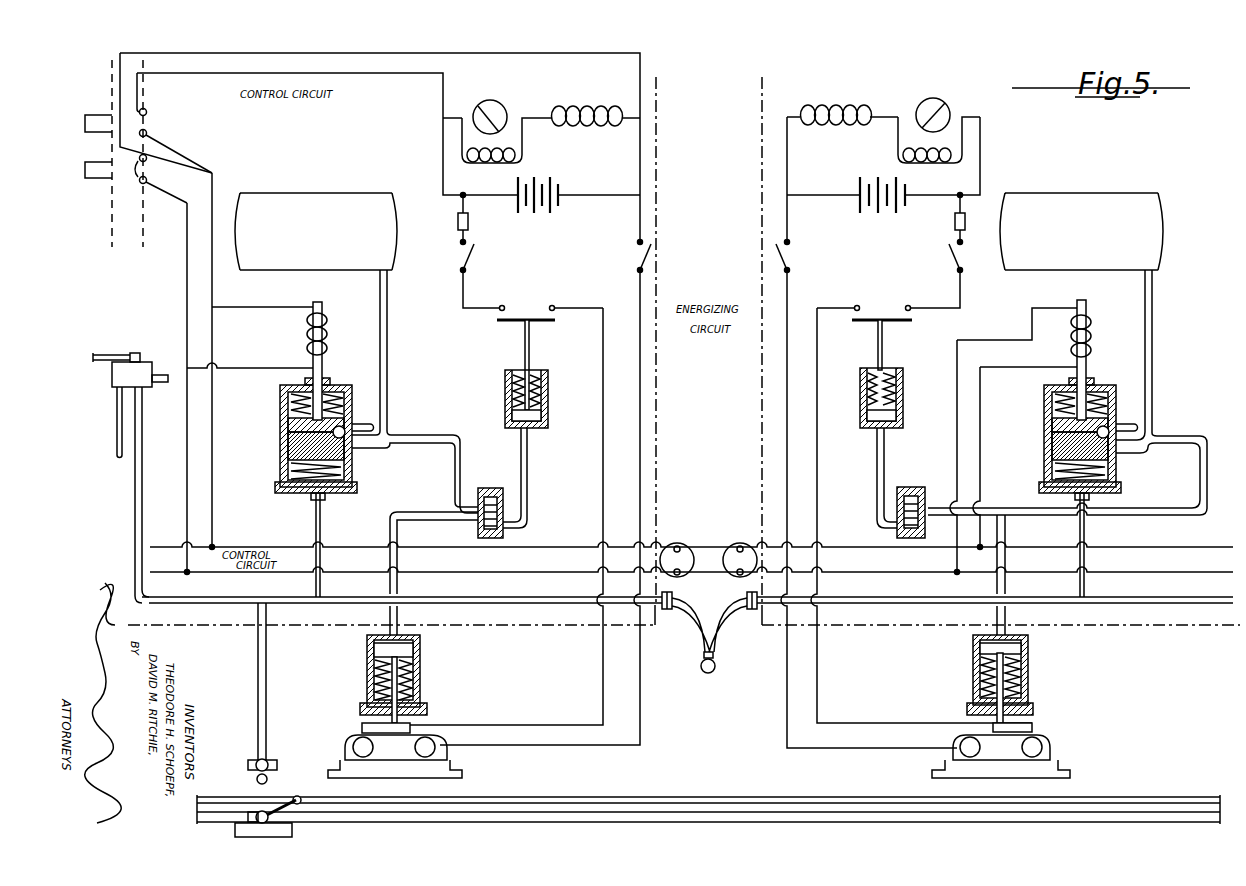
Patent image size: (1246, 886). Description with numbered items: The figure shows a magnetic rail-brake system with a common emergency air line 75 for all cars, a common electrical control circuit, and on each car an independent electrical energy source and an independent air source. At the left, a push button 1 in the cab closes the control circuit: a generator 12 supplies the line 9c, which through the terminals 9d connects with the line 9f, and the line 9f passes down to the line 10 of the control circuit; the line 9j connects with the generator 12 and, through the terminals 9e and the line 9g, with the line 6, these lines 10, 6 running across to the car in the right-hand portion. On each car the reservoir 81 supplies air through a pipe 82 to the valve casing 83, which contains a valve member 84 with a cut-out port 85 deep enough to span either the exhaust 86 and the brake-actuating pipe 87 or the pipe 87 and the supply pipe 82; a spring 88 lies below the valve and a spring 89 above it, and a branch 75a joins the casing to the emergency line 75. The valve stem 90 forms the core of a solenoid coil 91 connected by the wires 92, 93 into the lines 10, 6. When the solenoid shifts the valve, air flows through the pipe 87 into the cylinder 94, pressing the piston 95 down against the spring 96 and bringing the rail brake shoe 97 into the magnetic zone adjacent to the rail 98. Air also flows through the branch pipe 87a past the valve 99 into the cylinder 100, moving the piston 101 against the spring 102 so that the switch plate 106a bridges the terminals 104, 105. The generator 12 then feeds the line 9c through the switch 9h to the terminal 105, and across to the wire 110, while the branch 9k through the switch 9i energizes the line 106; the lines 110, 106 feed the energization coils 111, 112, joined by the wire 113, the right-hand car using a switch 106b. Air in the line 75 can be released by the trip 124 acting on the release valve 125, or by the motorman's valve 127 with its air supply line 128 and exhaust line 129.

The push button 1 is at (103, 147).
The control circuit line 6 is at (578, 577).
The generator line 9c is at (146, 100).
The terminals 9d is at (160, 131).
The terminals 9e is at (155, 180).
The control line 9f is at (215, 176).
The control line 9g is at (129, 171).
The switch 9h is at (460, 256).
The switch 9i is at (650, 254).
The generator line 9j is at (112, 90).
The generator branch 9k is at (640, 158).
The control circuit line 10 is at (566, 545).
The generator 12 is at (500, 108).
The emergency air line 75 is at (553, 596).
The branch of emergency air line 75a is at (321, 537).
The reservoir 81 is at (325, 196).
The supply pipe 82 is at (388, 350).
The valve casing 83 is at (328, 380).
The valve member 84 is at (288, 446).
The cut-out port 85 is at (288, 424).
The exhaust 86 is at (360, 420).
The brake-actuating pipe 87 is at (415, 434).
The branch pipe 87a is at (524, 478).
The spring 88 is at (289, 471).
The spring 89 is at (289, 398).
The valve stem 90 is at (323, 306).
The solenoid coil 91 is at (328, 340).
The wire 92 is at (264, 367).
The wire 93 is at (276, 306).
The cylinder 94 is at (420, 655).
The piston 95 is at (374, 650).
The spring 96 is at (374, 686).
The rail brake shoe 97 is at (462, 773).
The rail 98 is at (547, 796).
The valve 99 is at (475, 532).
The cylinder 100 is at (505, 391).
The piston 101 is at (512, 416).
The spring 102 is at (548, 402).
The terminal 104 is at (552, 305).
The terminal 105 is at (502, 305).
The supply circuit line 106 is at (640, 288).
The switch plate 106a is at (527, 318).
The switch 106b is at (880, 318).
The return wire 110 is at (603, 341).
The energization coil 111 is at (352, 742).
The energization coil 112 is at (443, 746).
The wire 113 is at (395, 735).
The automatic trip 124 is at (298, 796).
The release valve 125 is at (252, 776).
The motorman's valve 127 is at (112, 376).
The air supply line 128 is at (117, 421).
The exhaust line 129 is at (160, 384).